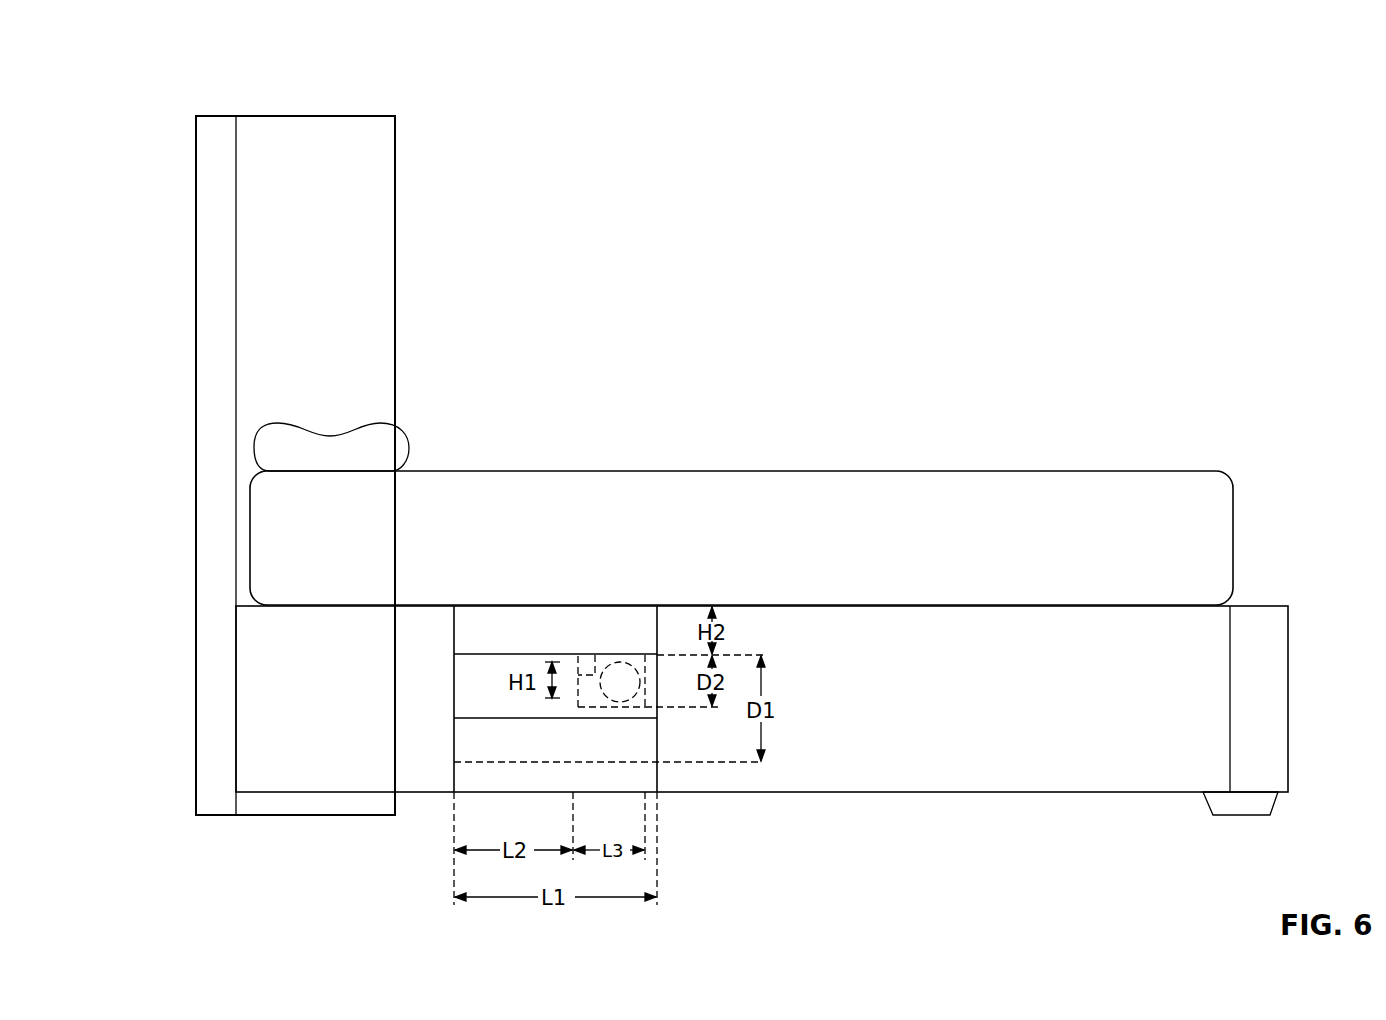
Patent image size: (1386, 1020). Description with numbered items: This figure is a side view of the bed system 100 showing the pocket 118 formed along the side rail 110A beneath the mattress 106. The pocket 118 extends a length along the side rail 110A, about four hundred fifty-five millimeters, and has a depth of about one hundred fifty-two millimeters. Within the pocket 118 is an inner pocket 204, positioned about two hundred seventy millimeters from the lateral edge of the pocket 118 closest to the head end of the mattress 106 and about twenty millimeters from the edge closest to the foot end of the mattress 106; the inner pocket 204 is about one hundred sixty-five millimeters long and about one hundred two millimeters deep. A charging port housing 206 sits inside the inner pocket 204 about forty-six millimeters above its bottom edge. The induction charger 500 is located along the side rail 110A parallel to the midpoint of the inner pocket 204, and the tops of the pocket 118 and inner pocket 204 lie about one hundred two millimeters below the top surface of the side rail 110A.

The bed system 100 is at (696, 414).
The mattress 106 is at (1065, 547).
The side rail 110A is at (1133, 712).
The pocket 118 is at (482, 651).
The inner pocket 204 is at (637, 653).
The charging port housing 206 is at (573, 663).
The induction charger 500 is at (637, 680).